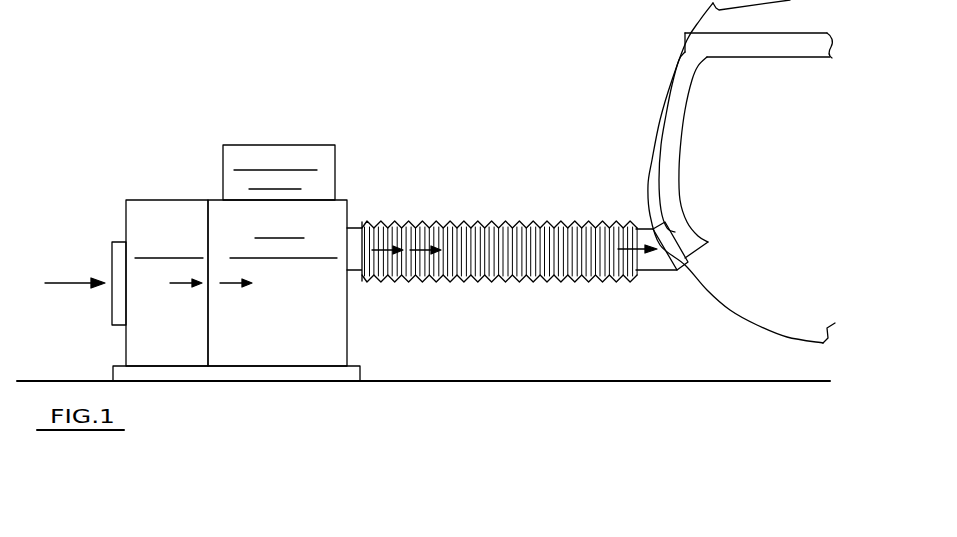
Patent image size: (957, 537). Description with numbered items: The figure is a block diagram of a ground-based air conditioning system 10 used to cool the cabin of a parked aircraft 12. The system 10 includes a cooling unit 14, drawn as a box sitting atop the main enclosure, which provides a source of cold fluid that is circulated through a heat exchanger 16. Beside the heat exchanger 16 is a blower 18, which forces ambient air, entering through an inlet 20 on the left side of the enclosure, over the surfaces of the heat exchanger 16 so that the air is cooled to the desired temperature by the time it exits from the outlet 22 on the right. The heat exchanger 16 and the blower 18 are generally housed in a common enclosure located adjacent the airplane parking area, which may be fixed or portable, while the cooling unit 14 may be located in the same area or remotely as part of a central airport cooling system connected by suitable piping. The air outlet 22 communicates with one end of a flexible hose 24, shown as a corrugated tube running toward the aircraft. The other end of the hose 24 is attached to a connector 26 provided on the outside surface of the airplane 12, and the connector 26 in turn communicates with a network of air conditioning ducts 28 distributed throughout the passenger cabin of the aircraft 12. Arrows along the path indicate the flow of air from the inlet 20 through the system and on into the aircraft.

The ground-based air conditioning system 10 is at (190, 175).
The parked aircraft 12 is at (660, 55).
The cooling unit 14 is at (315, 147).
The heat exchanger 16 is at (294, 330).
The blower 18 is at (181, 330).
The inlet 20 is at (110, 252).
The outlet 22 is at (365, 220).
The flexible hose 24 is at (505, 220).
The connector 26 is at (680, 272).
The air conditioning ducts 28 is at (795, 48).